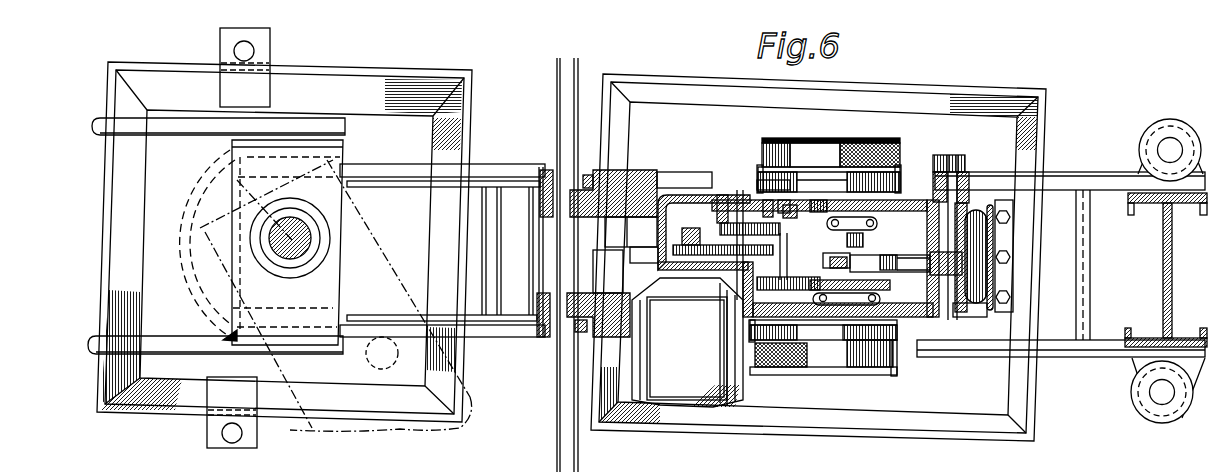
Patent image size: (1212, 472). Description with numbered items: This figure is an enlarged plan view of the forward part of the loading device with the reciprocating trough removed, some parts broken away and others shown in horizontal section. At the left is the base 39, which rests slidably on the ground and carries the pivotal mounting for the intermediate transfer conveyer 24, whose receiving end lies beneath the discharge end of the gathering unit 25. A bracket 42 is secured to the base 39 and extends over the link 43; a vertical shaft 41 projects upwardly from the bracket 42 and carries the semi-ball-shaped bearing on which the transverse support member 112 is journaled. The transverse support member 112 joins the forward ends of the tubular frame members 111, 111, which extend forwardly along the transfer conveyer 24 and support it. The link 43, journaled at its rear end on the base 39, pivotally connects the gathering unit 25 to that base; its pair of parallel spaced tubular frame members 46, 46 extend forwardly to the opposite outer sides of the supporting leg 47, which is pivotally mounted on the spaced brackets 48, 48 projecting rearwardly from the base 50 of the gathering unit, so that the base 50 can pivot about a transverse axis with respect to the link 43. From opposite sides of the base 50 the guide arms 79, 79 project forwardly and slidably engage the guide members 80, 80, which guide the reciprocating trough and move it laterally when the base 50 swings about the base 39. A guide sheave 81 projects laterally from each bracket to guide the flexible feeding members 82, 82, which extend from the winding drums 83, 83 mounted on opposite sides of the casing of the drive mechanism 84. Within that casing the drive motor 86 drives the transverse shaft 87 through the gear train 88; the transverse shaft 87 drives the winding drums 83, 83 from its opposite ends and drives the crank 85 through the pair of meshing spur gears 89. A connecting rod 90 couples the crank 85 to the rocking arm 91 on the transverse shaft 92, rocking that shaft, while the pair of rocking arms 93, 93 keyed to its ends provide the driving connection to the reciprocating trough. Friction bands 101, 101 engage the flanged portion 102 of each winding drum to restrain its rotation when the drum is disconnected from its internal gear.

The intermediate transfer conveyer 24 is at (247, 447).
The gathering unit 25 is at (865, 435).
The base 39 is at (441, 77).
The vertical shaft 41 is at (312, 236).
The bracket 42 is at (333, 320).
The link 43 is at (396, 159).
The tubular frame members 46 is at (496, 171).
The supporting leg 47 is at (525, 313).
The brackets 48 is at (580, 292).
The base 50 is at (989, 90).
The guide arms 79 is at (1097, 175).
The guide members 80 is at (1200, 328).
The guide sheave 81 is at (1141, 151).
The flexible feeding members 82 is at (900, 153).
The winding drums 83 is at (893, 132).
The drive mechanism 84 is at (727, 193).
The crank 85 is at (858, 255).
The drive motor 86 is at (742, 380).
The transverse shaft 87 is at (795, 268).
The gear train 88 is at (726, 232).
The meshing spur gears 89 is at (890, 288).
The connecting rod 90 is at (892, 253).
The rocking arm 91 is at (923, 261).
The transverse shaft 92 is at (958, 316).
The rocking arms 93 is at (968, 175).
The friction bands 101 is at (903, 182).
The flanged portion 102 is at (756, 178).
The tubular frame members 111 is at (147, 118).
The transverse support member 112 is at (337, 290).